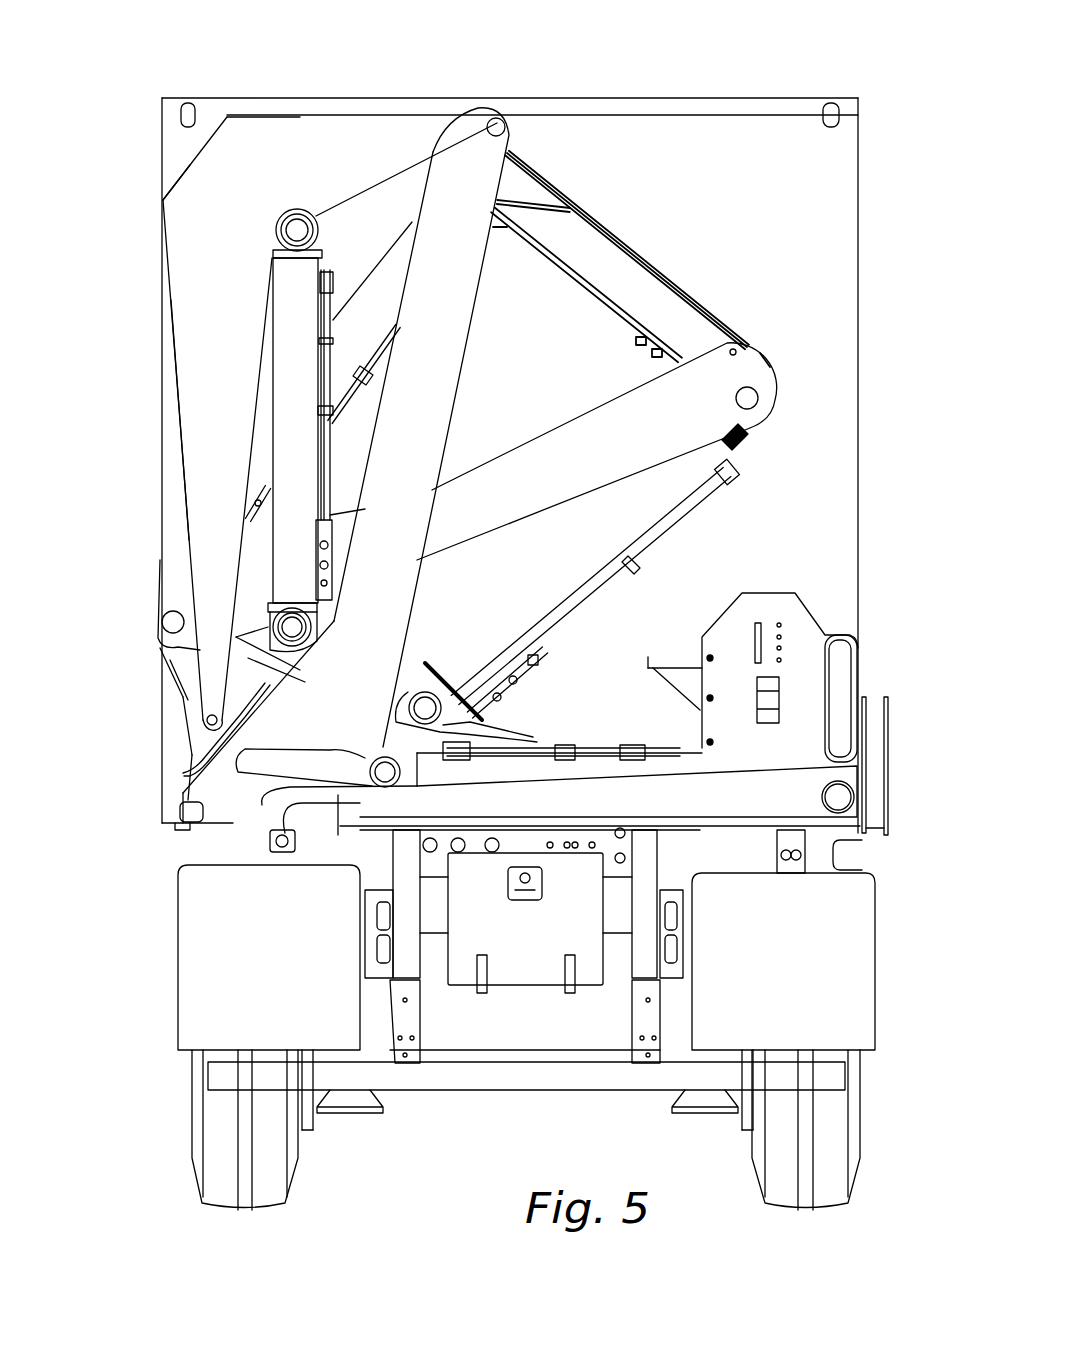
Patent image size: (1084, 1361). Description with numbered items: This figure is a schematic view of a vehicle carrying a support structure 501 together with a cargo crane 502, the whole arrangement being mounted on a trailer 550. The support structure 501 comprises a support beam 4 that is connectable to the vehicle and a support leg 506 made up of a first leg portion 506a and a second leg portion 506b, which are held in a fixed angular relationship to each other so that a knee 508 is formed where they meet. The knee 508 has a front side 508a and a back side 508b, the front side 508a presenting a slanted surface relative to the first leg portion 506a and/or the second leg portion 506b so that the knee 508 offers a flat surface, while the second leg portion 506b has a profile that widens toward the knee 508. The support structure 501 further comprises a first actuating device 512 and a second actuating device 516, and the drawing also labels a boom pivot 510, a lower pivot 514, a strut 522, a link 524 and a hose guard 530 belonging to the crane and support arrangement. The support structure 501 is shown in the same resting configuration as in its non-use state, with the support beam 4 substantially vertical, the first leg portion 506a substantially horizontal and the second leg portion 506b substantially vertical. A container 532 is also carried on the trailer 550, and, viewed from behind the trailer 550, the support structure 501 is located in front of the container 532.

The support structure 501 is at (285, 75).
The cargo crane 502 is at (815, 262).
The support beam 4 is at (440, 388).
The support leg 506 is at (228, 143).
The first leg portion 506a is at (318, 135).
The second leg portion 506b is at (190, 465).
The knee 508 is at (185, 193).
The front side 508a is at (190, 160).
The back side 508b is at (273, 240).
The boom pivot 510 is at (496, 118).
The first actuating device 512 is at (287, 530).
The lower pivot 514 is at (183, 823).
The second actuating device 516 is at (598, 803).
The strut 522 is at (422, 130).
The link 524 is at (207, 698).
The hose guard 530 is at (220, 737).
The container 532 is at (730, 112).
The trailer 550 is at (805, 995).